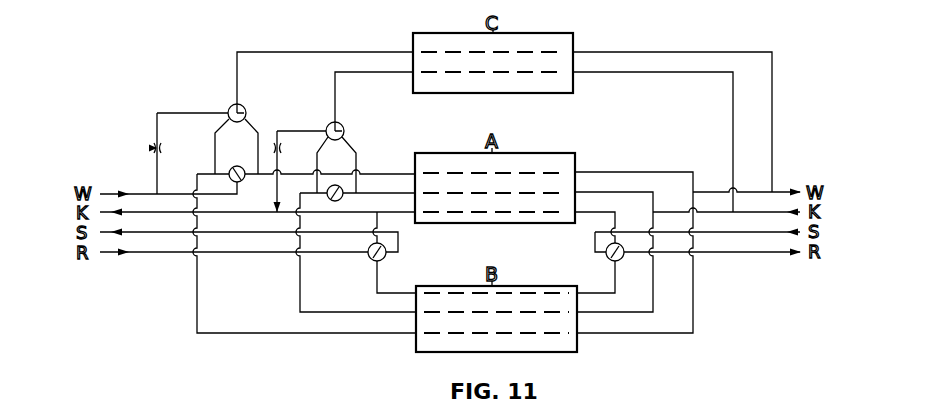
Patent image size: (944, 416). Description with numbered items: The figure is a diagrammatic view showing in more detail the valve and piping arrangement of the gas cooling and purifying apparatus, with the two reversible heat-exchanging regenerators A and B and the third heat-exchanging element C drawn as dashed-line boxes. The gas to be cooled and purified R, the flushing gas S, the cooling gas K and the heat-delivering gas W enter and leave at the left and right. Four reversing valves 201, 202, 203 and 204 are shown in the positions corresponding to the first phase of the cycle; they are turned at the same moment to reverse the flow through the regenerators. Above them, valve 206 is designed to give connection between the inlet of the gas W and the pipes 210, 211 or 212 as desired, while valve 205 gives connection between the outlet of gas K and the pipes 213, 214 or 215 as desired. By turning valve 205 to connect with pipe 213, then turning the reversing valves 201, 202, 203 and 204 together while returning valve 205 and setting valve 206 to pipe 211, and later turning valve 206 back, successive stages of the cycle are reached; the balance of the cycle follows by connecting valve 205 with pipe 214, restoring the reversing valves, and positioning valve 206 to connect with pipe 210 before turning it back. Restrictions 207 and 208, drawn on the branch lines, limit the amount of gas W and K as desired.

The reversing valve 201 is at (384, 262).
The reversing valve 202 is at (608, 259).
The reversing valve 203 is at (341, 199).
The reversing valve 204 is at (242, 181).
The valve 205 is at (344, 129).
The valve 206 is at (243, 106).
The restriction 207 is at (282, 147).
The restriction 208 is at (151, 147).
The pipe 210 is at (214, 133).
The pipe 211 is at (250, 125).
The pipe 212 is at (240, 76).
The pipe 213 is at (334, 165).
The pipe 214 is at (354, 147).
The pipe 215 is at (338, 97).